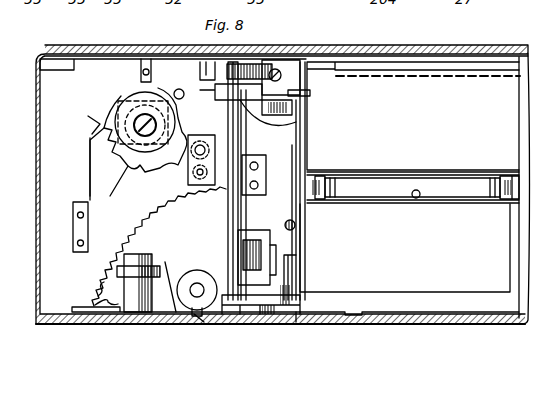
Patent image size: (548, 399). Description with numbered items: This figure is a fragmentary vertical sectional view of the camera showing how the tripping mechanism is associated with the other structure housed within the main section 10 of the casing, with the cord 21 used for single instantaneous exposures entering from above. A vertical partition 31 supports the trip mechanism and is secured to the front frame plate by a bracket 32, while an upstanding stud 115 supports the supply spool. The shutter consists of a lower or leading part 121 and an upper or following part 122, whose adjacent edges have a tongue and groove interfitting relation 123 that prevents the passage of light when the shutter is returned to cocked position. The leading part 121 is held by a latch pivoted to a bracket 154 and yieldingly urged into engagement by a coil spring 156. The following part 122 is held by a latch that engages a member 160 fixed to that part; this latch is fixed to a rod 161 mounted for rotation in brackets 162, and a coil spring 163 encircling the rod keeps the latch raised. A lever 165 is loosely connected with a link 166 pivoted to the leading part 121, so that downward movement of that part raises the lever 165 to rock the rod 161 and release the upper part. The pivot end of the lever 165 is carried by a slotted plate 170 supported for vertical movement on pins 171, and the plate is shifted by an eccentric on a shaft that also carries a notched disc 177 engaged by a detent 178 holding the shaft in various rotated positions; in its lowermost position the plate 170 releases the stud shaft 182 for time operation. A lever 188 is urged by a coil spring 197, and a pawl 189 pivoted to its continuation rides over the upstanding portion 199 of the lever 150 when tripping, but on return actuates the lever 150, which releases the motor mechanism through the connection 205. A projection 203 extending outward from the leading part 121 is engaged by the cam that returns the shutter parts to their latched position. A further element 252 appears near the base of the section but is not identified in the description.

The main section of casing 10 is at (430, 50).
The cord 21 is at (203, 149).
The vertical partition 31 is at (247, 133).
The bracket 32 is at (264, 172).
The upstanding stud 115 is at (138, 262).
The leading part of shutter 121 is at (405, 248).
The following part of shutter 122 is at (413, 116).
The tongue and groove interfitting relation 123 is at (415, 198).
The lever 150 is at (88, 306).
The bracket 154 is at (350, 313).
The coil spring 156 is at (300, 238).
The member 160 is at (308, 94).
The rod 161 is at (212, 60).
The brackets 162 is at (307, 64).
The coil spring 163 is at (247, 82).
The lever 165 is at (295, 123).
The link 166 is at (298, 143).
The slotted plate 170 is at (142, 172).
The pins 171 is at (138, 70).
The notched disc 177 is at (128, 90).
The detent 178 is at (88, 134).
The stud shaft 182 is at (175, 196).
The lever 188 is at (228, 212).
The pawl 189 is at (198, 316).
The coil spring 197 is at (243, 248).
The upstanding portion 199 is at (228, 304).
The projection 203 is at (296, 223).
The connection 205 is at (96, 285).
The base plate 252 is at (298, 322).